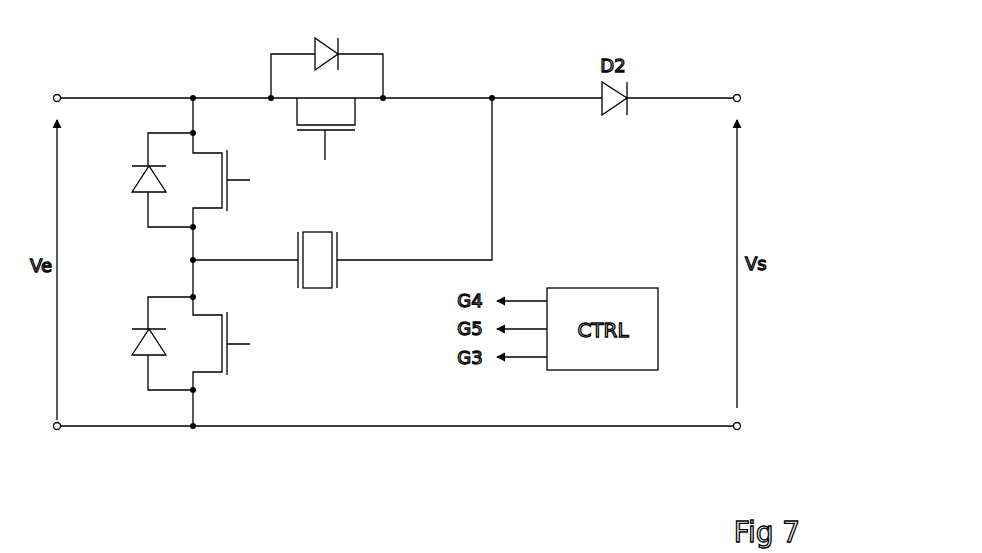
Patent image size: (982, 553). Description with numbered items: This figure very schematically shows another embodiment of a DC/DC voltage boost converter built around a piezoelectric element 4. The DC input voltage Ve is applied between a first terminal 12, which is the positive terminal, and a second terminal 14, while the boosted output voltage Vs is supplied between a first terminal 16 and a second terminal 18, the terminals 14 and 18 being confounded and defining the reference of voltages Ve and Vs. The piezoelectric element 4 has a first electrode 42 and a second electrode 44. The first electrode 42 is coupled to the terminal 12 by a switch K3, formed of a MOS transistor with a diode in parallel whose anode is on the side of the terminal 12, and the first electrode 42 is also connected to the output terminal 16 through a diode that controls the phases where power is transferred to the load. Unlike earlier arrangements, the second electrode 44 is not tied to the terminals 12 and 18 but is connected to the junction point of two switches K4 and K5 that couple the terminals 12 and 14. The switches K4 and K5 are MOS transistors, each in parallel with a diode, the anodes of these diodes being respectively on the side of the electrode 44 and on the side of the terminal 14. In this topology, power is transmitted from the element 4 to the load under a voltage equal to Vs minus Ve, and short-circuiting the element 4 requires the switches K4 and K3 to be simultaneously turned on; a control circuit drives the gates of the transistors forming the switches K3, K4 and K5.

The first terminal of application of DC input voltage Ve 12 is at (59, 94).
The second terminal of application of voltage Ve 14 is at (59, 430).
The first terminal of supply of voltage Vs 16 is at (741, 95).
The second terminal of supply of voltage Vs 18 is at (739, 430).
The first electrode of the piezoelectric element 42 is at (492, 94).
The second electrode of the piezoelectric element 44 is at (197, 260).
The piezoelectric element 4 is at (327, 293).
The switch K3 is at (381, 46).
The switch K4 is at (135, 231).
The switch K5 is at (135, 375).